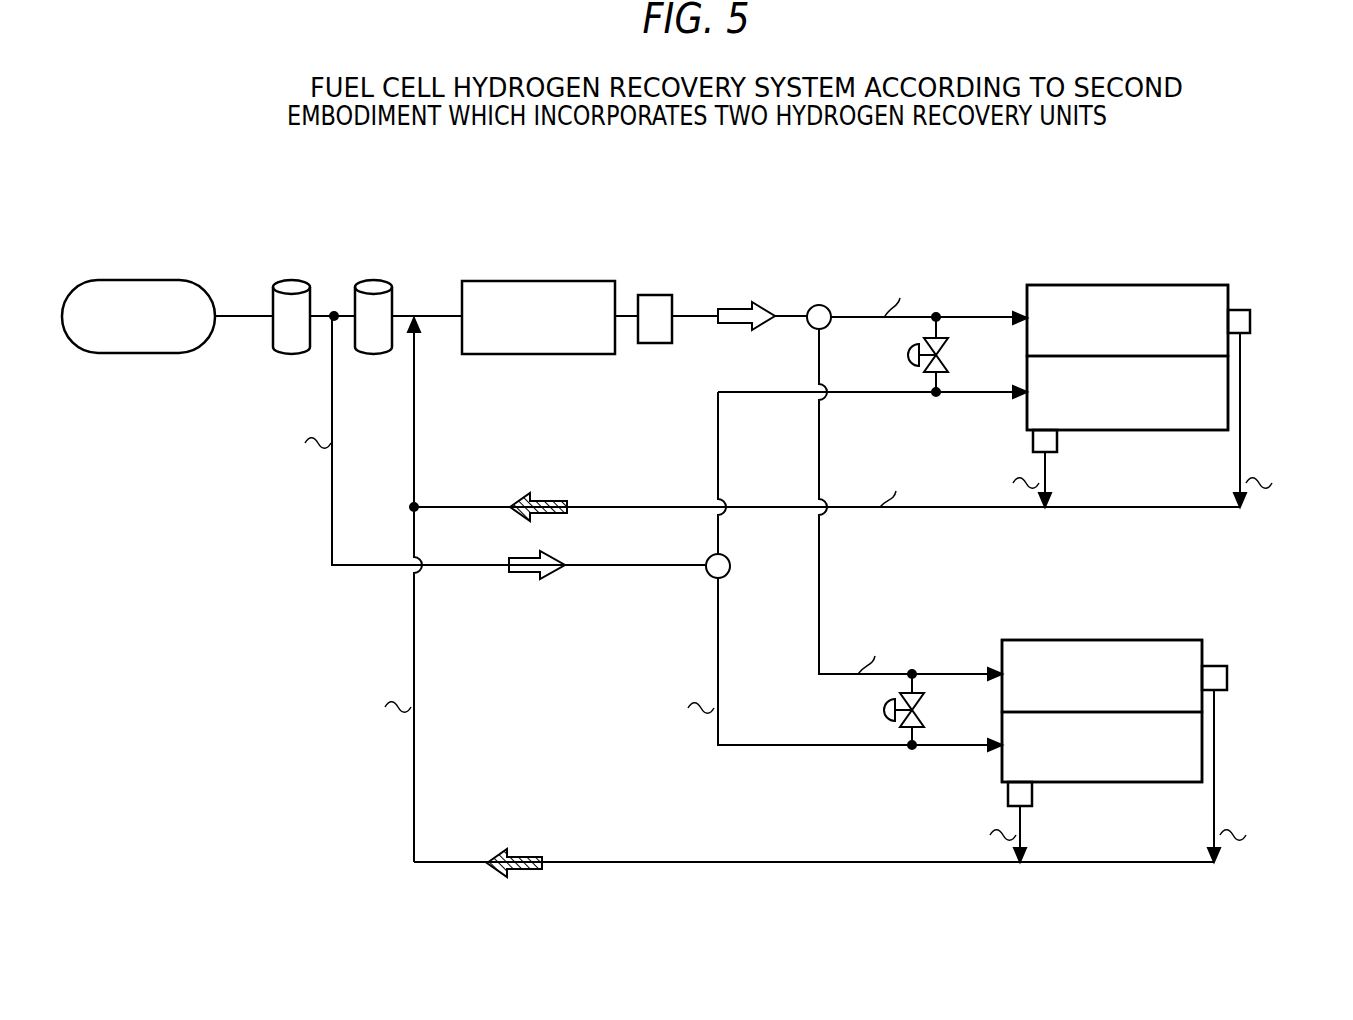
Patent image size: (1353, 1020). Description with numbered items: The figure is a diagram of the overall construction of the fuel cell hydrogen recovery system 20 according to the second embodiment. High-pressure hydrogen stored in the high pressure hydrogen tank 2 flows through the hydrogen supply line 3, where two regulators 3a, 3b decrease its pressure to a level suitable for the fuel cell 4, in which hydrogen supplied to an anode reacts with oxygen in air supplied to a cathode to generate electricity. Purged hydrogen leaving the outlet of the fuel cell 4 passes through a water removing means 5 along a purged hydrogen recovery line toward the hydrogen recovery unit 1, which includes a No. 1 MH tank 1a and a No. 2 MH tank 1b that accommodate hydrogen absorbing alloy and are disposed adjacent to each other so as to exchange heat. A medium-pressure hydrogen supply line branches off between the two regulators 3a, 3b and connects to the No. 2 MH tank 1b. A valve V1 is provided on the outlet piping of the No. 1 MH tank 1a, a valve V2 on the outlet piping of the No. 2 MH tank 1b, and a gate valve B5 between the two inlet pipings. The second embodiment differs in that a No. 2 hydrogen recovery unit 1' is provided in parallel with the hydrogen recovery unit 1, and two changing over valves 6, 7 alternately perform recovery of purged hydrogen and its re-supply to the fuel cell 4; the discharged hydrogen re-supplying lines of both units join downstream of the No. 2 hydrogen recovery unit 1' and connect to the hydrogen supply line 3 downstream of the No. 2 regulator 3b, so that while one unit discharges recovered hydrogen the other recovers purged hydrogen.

The hydrogen recovery unit 1 is at (1145, 315).
The No. 2 hydrogen recovery unit 1' is at (1122, 669).
The No. 1 MH tank 1a is at (1128, 285).
The No. 2 MH tank 1b is at (1126, 432).
The high pressure hydrogen tank 2 is at (140, 280).
The hydrogen supply line 3 is at (247, 313).
The regulator 3a is at (292, 280).
The No. 2 regulator 3b is at (375, 280).
The fuel cell 4 is at (540, 281).
The water removing means 5 is at (652, 345).
The changing over valve 6 is at (826, 306).
The changing over valve 7 is at (732, 566).
The fuel cell hydrogen recovery system 20 is at (444, 230).
The valve V1 is at (1252, 320).
The valve V2 is at (1029, 440).
The gate valve B5 is at (906, 355).